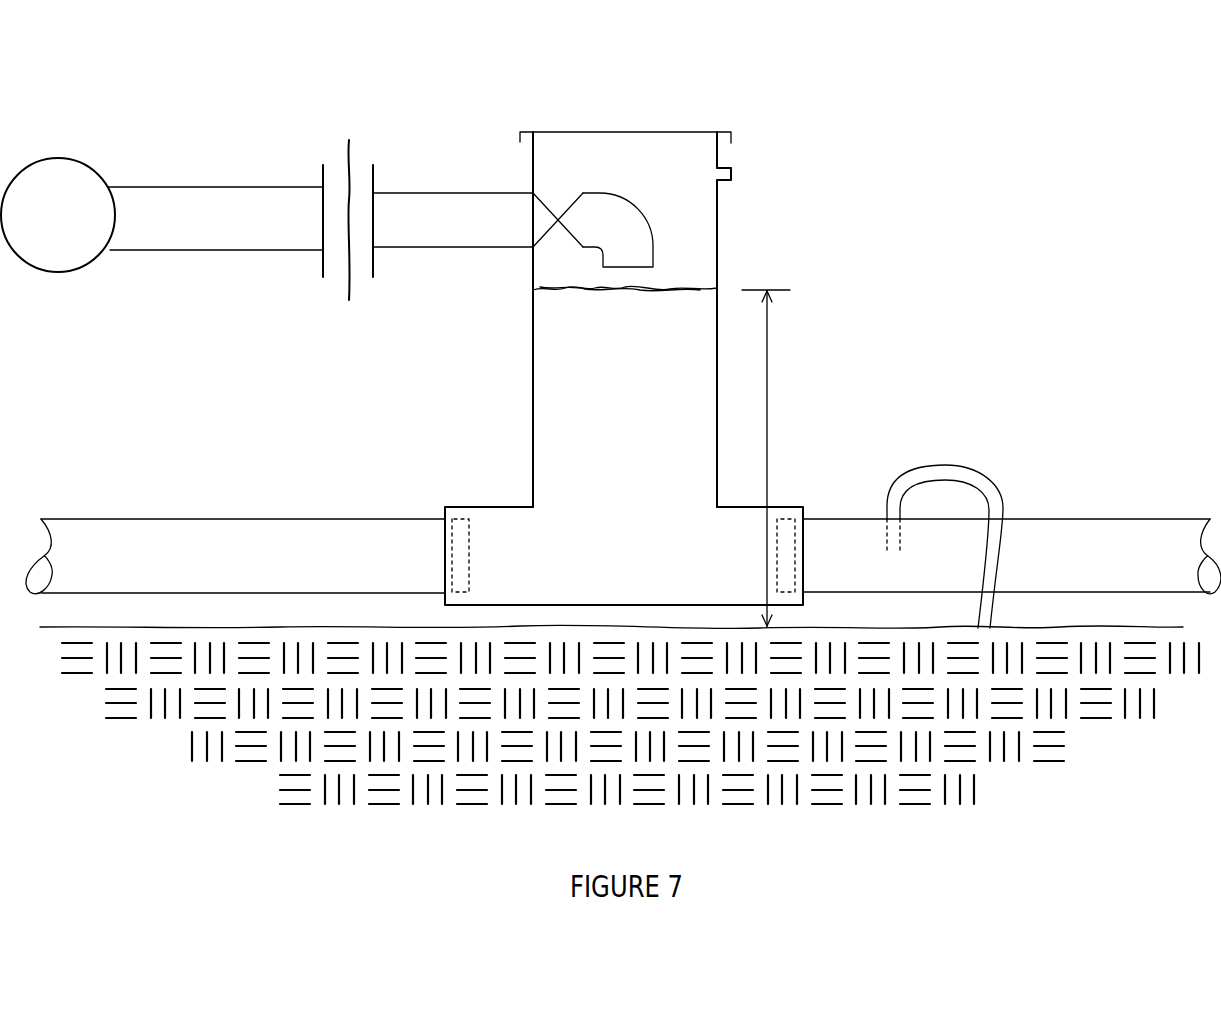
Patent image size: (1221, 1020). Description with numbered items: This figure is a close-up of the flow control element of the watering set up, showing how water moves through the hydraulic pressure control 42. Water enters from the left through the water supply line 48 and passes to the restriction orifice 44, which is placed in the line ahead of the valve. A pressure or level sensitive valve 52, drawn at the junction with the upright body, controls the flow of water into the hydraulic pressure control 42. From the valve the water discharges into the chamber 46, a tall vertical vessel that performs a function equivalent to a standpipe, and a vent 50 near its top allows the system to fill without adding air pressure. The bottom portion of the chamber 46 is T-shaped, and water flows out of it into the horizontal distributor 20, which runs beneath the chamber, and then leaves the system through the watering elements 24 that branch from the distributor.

The distributor 20 is at (190, 532).
The watering elements 24 is at (972, 480).
The hydraulic pressure control 42 is at (679, 38).
The restriction orifice 44 is at (350, 160).
The chamber 46 is at (625, 319).
The water supply line 48 is at (70, 162).
The vent 50 is at (733, 174).
The pressure or level sensitive valve 52 is at (542, 230).